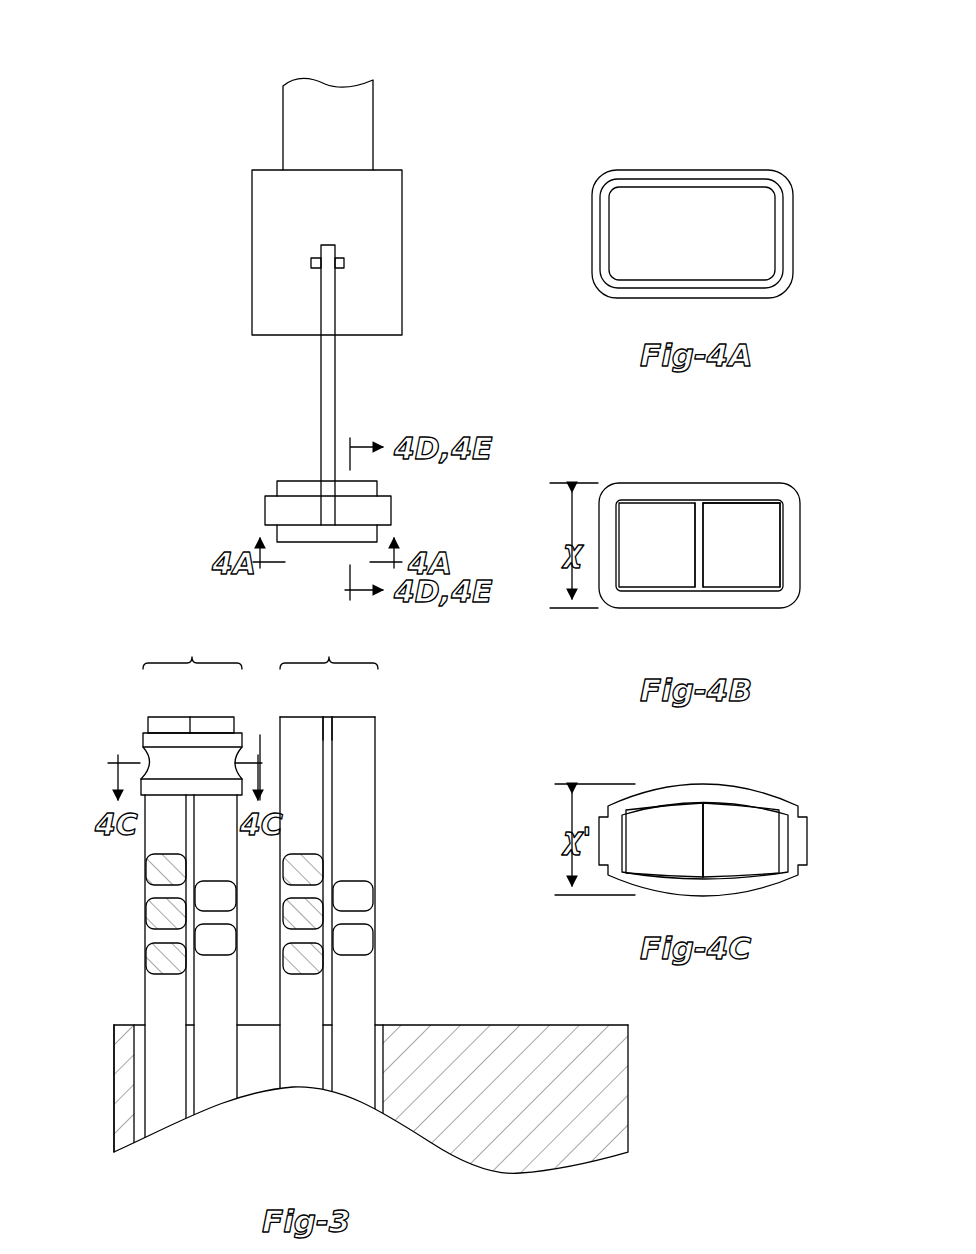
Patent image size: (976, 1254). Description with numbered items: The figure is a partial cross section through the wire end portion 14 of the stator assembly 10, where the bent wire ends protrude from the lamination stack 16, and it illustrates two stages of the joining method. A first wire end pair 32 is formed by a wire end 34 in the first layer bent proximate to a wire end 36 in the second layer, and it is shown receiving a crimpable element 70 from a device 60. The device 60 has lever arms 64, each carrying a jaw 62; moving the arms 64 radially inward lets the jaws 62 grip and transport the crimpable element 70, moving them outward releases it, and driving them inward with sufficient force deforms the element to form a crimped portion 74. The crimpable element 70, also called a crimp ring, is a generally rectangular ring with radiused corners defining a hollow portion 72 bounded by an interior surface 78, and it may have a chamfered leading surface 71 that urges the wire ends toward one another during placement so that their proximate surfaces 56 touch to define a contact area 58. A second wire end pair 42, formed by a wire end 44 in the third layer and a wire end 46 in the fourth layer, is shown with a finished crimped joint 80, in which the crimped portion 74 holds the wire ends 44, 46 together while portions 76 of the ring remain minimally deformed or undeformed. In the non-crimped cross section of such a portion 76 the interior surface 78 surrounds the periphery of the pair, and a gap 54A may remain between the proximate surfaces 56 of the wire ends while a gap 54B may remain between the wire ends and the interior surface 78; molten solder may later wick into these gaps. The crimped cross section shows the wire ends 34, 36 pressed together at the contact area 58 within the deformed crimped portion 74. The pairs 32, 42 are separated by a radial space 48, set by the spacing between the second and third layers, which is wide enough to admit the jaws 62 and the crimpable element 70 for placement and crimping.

In FIG. 3, the stator assembly 10 is at (103, 1006).
In FIG. 3, the wire end portion 14 is at (412, 914).
In FIG. 3, the lamination stack 16 is at (493, 1023).
In FIG. 3, the wire end pair 32 is at (192, 652).
In FIG. 3, the wire end 34 is at (160, 846).
In FIG. 4C, the wire end 34 is at (662, 876).
In FIG. 3, the wire end 36 is at (215, 857).
In FIG. 4C, the wire end 36 is at (748, 876).
In FIG. 3, the wire end pair 42 is at (329, 652).
In FIG. 3, the wire end 44 is at (305, 808).
In FIG. 4B, the wire end 44 is at (632, 588).
In FIG. 3, the wire end 46 is at (356, 780).
In FIG. 4B, the wire end 46 is at (750, 590).
In FIG. 3, the radial space 48 is at (259, 733).
In FIG. 3, the gap 54A is at (329, 712).
In FIG. 4B, the gap 54A is at (699, 578).
In FIG. 4B, the gap 54B is at (780, 545).
In FIG. 3, the proximate surfaces 56 is at (335, 754).
In FIG. 4B, the proximate surfaces 56 is at (700, 520).
In FIG. 4C, the contact area 58 is at (706, 816).
In FIG. 3, the device 60 is at (418, 148).
In FIG. 3, the jaws 62 is at (265, 513).
In FIG. 3, the arm 64 is at (329, 395).
In FIG. 4A, the crimpable element 70 is at (763, 143).
In FIG. 4B, the crimpable element 70 is at (645, 483).
In FIG. 4A, the leading surface 71 is at (667, 185).
In FIG. 4A, the hollow portion 72 is at (703, 243).
In FIG. 3, the crimped portion 74 is at (216, 770).
In FIG. 4C, the crimped portion 74 is at (778, 792).
In FIG. 3, the minimally deformed portion 76 is at (150, 742).
In FIG. 4A, the interior surface 78 is at (775, 208).
In FIG. 4B, the interior surface 78 is at (752, 505).
In FIG. 4C, the interior surface 78 is at (748, 800).
In FIG. 3, the crimped joint 80 is at (136, 752).
In FIG. 4C, the crimped joint 80 is at (717, 824).